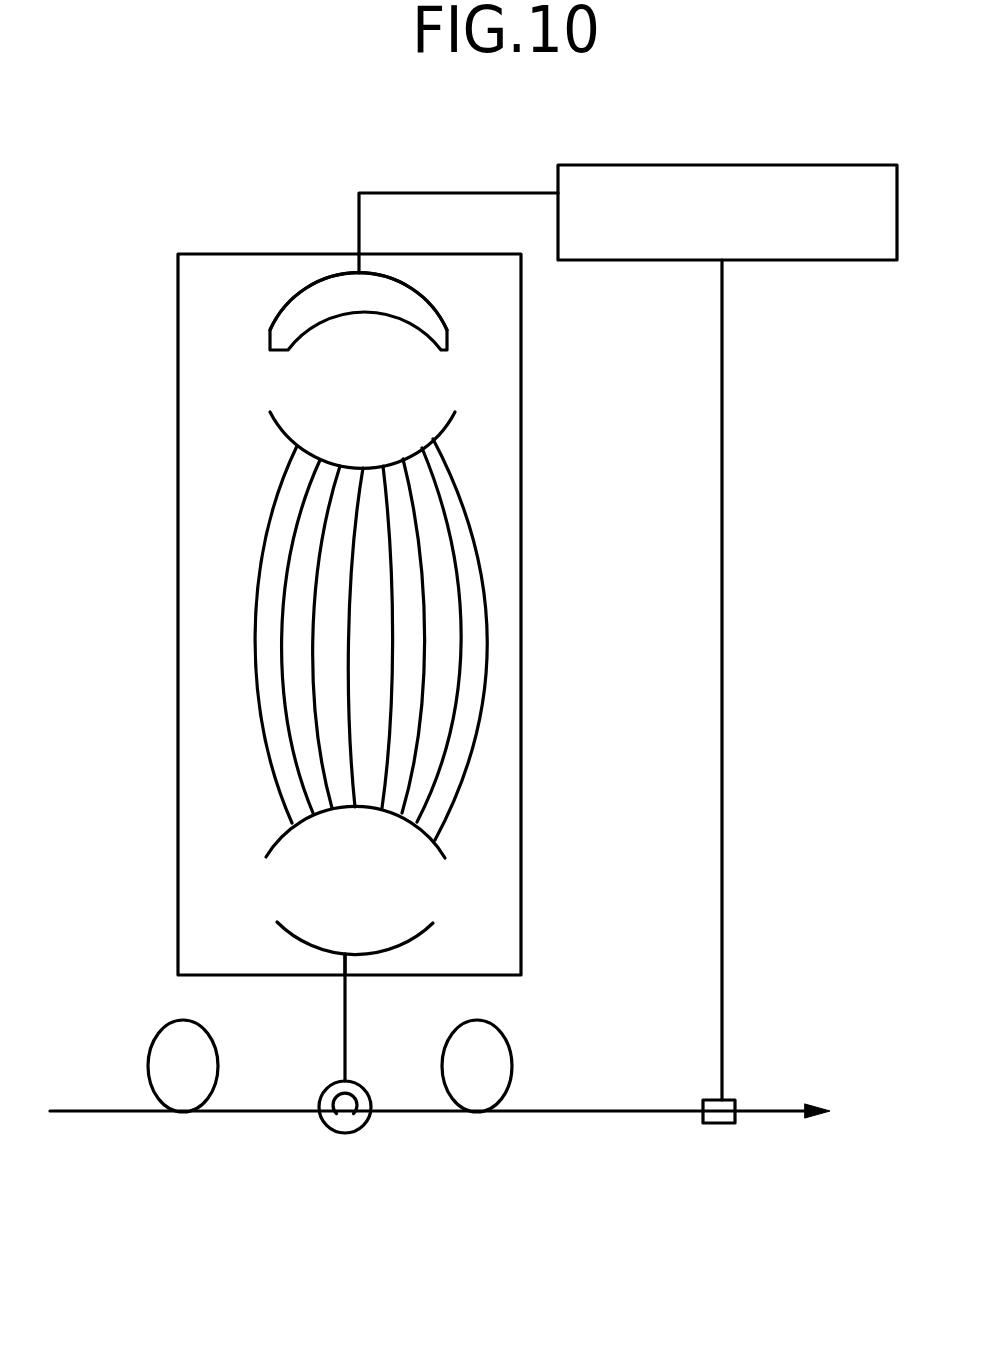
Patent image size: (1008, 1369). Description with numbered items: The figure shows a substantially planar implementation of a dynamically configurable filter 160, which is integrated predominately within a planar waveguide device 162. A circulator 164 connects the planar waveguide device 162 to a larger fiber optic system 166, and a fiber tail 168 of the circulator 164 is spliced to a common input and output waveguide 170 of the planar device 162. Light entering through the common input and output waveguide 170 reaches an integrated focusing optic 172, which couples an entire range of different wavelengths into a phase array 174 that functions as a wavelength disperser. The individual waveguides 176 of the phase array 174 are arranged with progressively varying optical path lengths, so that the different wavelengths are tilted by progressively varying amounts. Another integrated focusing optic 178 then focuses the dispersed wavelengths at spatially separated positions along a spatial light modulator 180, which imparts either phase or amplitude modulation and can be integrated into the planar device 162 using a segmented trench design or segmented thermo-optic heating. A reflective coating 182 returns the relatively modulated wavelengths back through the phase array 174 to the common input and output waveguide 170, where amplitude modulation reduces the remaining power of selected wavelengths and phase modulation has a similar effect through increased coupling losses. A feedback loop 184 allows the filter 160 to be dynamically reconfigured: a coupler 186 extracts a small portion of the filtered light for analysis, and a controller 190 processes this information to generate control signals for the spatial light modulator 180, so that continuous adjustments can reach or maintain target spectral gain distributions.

The dynamically configurable filter 160 is at (316, 558).
The planar waveguide device 162 is at (197, 687).
The circulator 164 is at (333, 1133).
The fiber optic system 166 is at (562, 1112).
The fiber tail 168 is at (345, 1040).
The common input and output waveguide 170 is at (345, 967).
The integrated focusing optic 172 is at (402, 902).
The phase array 174 is at (373, 639).
The individual waveguides 176 is at (413, 533).
The integrated focusing optic 178 is at (410, 392).
The spatial light modulator 180 is at (303, 318).
The reflective coating 182 is at (433, 300).
The feedback loop 184 is at (722, 687).
The coupler 186 is at (717, 1125).
The controller 190 is at (743, 222).